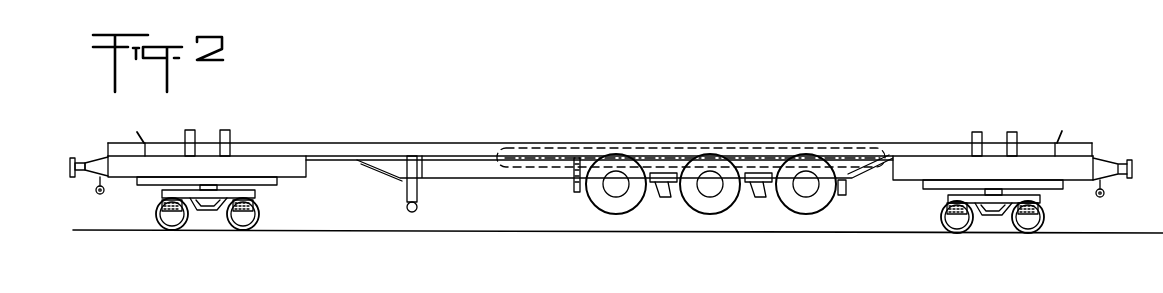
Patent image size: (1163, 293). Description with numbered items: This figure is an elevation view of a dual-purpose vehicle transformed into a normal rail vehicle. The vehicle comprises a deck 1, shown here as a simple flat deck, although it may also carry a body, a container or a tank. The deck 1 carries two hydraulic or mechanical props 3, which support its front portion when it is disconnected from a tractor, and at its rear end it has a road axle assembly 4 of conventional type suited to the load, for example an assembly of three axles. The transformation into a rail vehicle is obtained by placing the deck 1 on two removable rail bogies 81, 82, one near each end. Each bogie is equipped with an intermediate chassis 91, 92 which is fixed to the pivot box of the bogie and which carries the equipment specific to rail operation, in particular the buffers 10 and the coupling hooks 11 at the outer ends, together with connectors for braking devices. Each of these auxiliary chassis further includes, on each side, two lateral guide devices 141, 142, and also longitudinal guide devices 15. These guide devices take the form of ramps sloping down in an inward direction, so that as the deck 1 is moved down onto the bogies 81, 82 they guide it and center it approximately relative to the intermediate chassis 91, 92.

The deck 1 is at (678, 143).
The props 3 is at (418, 195).
The road axle assembly 4 is at (708, 204).
The rail bogie 81 is at (212, 213).
The rail bogie 82 is at (995, 215).
The intermediate chassis 91 is at (280, 170).
The intermediate chassis 92 is at (943, 172).
The buffers 10 is at (71, 167).
The coupling hooks 11 is at (98, 191).
The lateral guide device 141 is at (193, 136).
The lateral guide device 142 is at (231, 136).
The longitudinal guide devices 15 is at (137, 133).